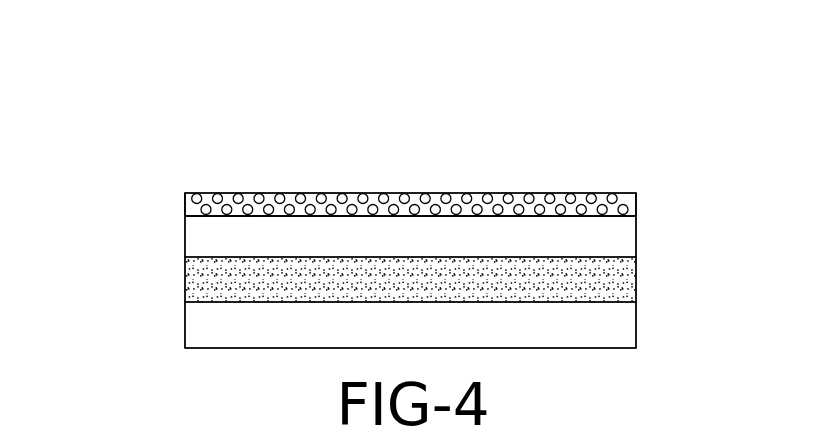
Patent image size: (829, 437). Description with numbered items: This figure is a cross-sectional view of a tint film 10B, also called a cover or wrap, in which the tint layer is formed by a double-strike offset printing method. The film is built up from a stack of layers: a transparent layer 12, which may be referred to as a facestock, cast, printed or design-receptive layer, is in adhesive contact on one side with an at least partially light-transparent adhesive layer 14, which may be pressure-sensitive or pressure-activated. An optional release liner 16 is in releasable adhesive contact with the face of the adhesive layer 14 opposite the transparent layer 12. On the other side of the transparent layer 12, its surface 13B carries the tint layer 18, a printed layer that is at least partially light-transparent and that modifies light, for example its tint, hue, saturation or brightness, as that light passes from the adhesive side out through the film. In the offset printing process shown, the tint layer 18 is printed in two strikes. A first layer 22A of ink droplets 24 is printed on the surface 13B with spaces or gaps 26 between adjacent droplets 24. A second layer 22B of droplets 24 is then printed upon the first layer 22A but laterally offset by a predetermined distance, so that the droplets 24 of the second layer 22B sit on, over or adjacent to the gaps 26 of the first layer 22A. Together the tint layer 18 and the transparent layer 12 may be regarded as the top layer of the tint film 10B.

The tint film 10B is at (228, 138).
The transparent layer 12 is at (602, 239).
The surface of transparent layer 13B is at (217, 216).
The adhesive layer 14 is at (590, 270).
The release liner 16 is at (578, 316).
The tint layer 18 is at (580, 198).
The first layer of ink droplets 22A is at (636, 202).
The second layer of ink droplets 22B is at (185, 194).
The ink droplets 24 is at (327, 206).
The gaps 26 is at (342, 216).